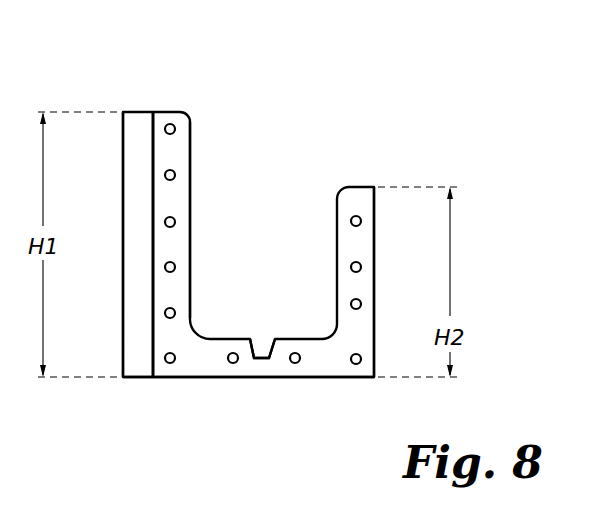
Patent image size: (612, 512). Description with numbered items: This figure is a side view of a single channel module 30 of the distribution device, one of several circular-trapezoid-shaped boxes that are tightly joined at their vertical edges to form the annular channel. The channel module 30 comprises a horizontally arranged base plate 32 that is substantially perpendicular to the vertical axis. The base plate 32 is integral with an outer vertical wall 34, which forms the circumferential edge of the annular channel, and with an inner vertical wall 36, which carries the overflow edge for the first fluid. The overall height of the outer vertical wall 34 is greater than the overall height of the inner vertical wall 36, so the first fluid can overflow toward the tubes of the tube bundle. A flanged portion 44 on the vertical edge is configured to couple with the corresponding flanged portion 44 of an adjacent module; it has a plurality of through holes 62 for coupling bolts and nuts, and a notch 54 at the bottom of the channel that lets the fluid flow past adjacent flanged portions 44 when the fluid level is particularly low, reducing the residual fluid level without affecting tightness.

The channel module 30 is at (288, 177).
The base plate 32 is at (337, 378).
The outer vertical wall 34 is at (137, 130).
The inner vertical wall 36 is at (376, 217).
The flanged portion 44 is at (178, 153).
The notch 54 is at (265, 359).
The through hole 62 is at (172, 365).